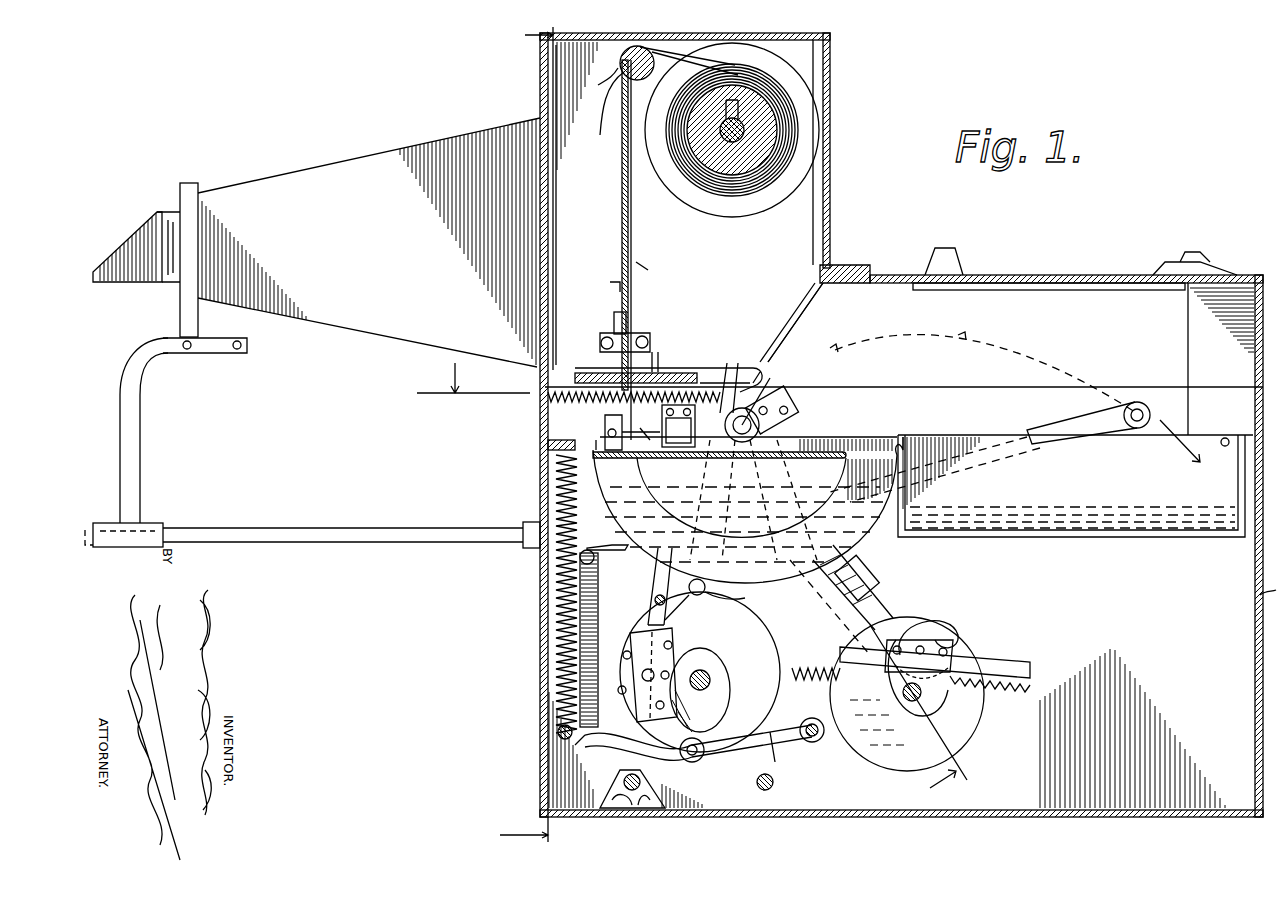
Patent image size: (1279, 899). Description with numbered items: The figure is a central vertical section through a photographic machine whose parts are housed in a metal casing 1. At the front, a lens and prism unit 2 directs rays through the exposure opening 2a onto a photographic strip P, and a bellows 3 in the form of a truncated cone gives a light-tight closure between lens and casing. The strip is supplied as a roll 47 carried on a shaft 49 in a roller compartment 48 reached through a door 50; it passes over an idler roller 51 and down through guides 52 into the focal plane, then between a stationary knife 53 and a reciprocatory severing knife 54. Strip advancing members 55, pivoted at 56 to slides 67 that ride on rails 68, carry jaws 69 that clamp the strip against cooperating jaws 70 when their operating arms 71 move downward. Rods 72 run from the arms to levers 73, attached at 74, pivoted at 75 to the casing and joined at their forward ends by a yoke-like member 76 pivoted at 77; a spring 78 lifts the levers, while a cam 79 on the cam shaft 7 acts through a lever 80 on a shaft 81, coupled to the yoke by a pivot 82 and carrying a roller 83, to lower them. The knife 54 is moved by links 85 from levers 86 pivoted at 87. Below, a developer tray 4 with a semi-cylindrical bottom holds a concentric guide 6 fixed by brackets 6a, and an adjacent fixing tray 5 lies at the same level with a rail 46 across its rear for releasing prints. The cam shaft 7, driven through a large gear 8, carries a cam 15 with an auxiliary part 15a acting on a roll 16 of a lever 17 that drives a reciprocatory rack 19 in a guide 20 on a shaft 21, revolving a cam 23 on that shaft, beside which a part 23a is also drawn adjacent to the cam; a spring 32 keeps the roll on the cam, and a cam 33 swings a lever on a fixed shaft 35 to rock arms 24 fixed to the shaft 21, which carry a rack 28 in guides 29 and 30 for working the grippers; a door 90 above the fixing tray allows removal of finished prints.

The casing 1 is at (1267, 546).
The lens and prism unit 2 is at (168, 212).
The exposure opening 2a is at (554, 270).
The bellows 3 is at (333, 175).
The developer tray 4 is at (845, 450).
The fixing tray 5 is at (1075, 486).
The guide 6 is at (800, 440).
The brackets 6a is at (678, 426).
The cam shaft 7 is at (700, 672).
The large gear 8 is at (850, 583).
The cam 15 is at (740, 755).
The auxiliary cam part 15a is at (640, 640).
The roll 16 is at (712, 670).
The lever 17 is at (627, 762).
The reciprocatory rack 19 is at (1028, 674).
The guide 20 is at (955, 652).
The shaft 21 is at (925, 694).
The cam 23 is at (980, 737).
The hook arm 23a is at (945, 627).
The arms 24 is at (815, 598).
The rack 28 is at (888, 602).
The guide 29 is at (878, 576).
The guide 30 is at (795, 400).
The spring 32 is at (820, 682).
The cam 33 is at (600, 468).
The fixed shaft 35 is at (775, 785).
The rail 46 is at (1226, 438).
The roll 47 is at (790, 122).
The roller compartment 48 is at (732, 147).
The shaft 49 is at (745, 120).
The door 50 is at (832, 173).
The idler roller 51 is at (625, 70).
The guides 52 is at (601, 118).
The stationary knife 53 is at (598, 372).
The reciprocatory severing knife 54 is at (700, 367).
The strip advancing members 55 is at (648, 268).
The pivot 56 is at (603, 340).
The slides 67 is at (610, 282).
The rails 68 is at (630, 183).
The jaw 69 is at (614, 316).
The jaw 70 is at (640, 300).
The operating arm 71 is at (648, 340).
The rod 72 is at (658, 368).
The lever 73 is at (1062, 428).
The attachment point 74 is at (656, 566).
The pivot 75 is at (1140, 405).
The yoke-like member 76 is at (600, 590).
The pivot 77 is at (622, 550).
The spring 78 is at (580, 594).
The cam 79 is at (725, 692).
The lever 80 is at (782, 750).
The shaft 81 is at (820, 740).
The pivot 82 is at (560, 735).
The roller 83 is at (693, 763).
The links 85 is at (752, 380).
The levers 86 is at (768, 360).
The pivot 87 is at (717, 599).
The door 90 is at (1040, 275).
The photographic strip P is at (633, 212).